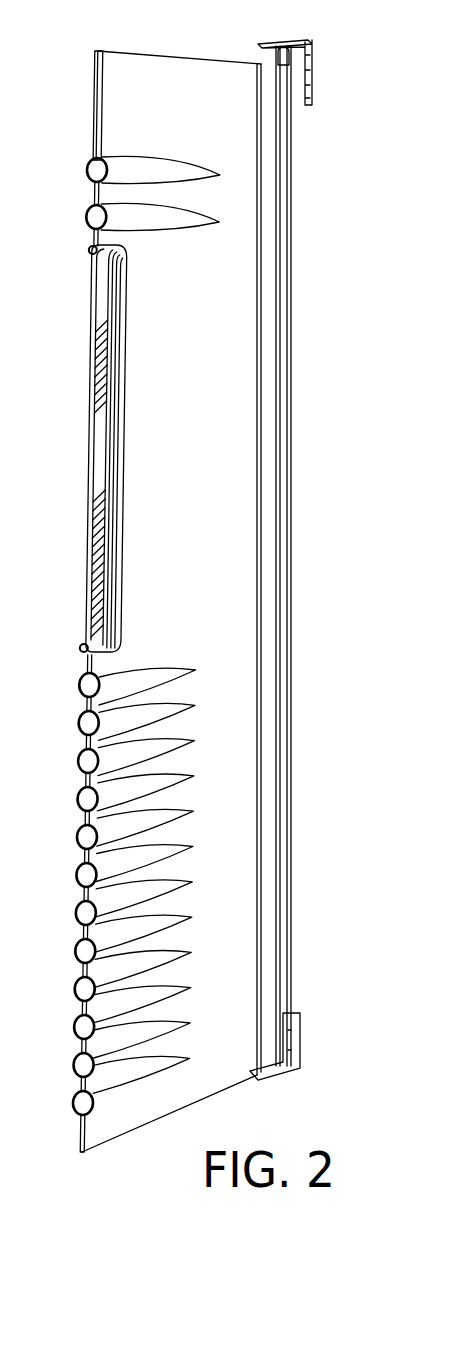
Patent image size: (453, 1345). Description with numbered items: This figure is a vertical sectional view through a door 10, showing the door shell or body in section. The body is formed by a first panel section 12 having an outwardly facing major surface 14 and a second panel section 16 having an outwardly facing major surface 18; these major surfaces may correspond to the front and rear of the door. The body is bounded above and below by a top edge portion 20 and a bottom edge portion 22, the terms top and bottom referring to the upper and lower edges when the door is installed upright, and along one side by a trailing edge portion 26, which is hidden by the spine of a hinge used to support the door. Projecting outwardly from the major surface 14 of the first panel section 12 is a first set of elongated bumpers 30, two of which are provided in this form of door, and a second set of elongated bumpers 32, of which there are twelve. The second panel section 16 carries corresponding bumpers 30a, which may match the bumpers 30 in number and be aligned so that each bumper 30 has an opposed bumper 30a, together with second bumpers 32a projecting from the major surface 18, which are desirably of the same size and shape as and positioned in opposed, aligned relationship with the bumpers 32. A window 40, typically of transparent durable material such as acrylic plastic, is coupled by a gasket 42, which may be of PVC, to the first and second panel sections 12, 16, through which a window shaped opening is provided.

The door 10 is at (78, 463).
The first panel section 12 is at (215, 522).
The outwardly facing major surface 14 is at (182, 568).
The second panel section 16 is at (93, 125).
The outwardly facing major surface 18 is at (93, 95).
The top edge portion 20 is at (173, 55).
The bottom edge portion 22 is at (155, 1122).
The trailing edge portion 26 is at (292, 404).
The first bumpers 30 is at (128, 213).
The first bumpers 30a is at (87, 217).
The second bumpers 32 is at (148, 713).
The second bumpers 32a is at (78, 727).
The window 40 is at (103, 390).
The gasket 42 is at (123, 423).